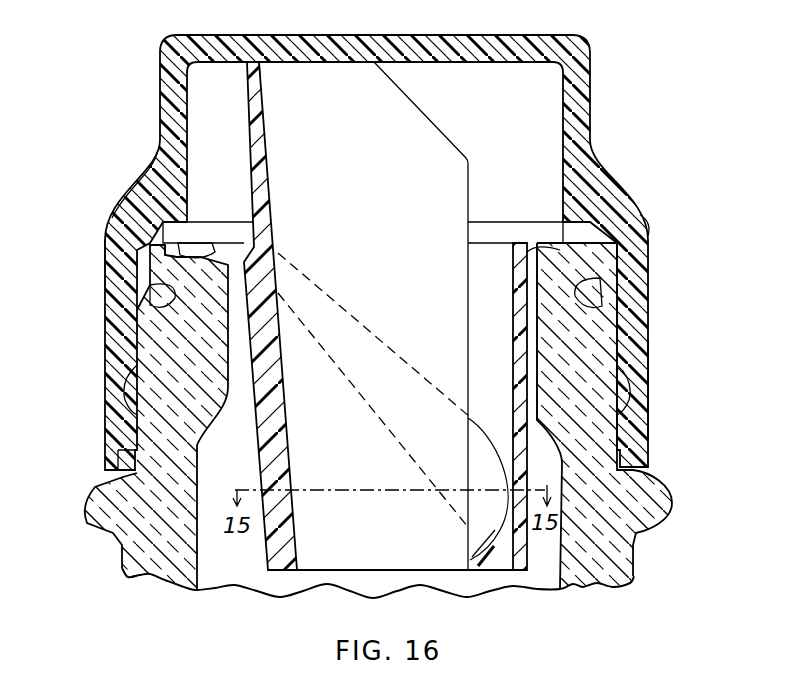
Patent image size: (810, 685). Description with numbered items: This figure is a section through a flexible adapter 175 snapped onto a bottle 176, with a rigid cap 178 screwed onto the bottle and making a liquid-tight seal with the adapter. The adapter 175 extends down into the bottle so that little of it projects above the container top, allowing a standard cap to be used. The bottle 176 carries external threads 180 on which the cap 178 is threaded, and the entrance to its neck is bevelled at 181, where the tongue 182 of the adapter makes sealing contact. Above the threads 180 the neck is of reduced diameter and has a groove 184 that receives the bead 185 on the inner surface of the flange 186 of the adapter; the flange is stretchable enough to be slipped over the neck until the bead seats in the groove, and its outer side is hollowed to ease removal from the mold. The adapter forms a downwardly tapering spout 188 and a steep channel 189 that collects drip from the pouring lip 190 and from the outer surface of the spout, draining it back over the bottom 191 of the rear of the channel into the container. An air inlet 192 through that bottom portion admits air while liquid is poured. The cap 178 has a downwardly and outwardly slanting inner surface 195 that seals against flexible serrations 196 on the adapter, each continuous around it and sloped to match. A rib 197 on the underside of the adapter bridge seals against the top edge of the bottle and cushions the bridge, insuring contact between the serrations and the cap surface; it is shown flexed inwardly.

The adapter 175 is at (282, 422).
The bottle 176 is at (608, 583).
The cap 178 is at (585, 148).
The external threads 180 is at (648, 370).
The bevelled entrance 181 is at (205, 232).
The tongue 182 is at (237, 240).
The groove 184 is at (575, 297).
The bead 185 is at (160, 288).
The flange 186 is at (640, 233).
The spout 188 is at (432, 135).
The channel 189 is at (487, 240).
The pouring lip 190 is at (250, 70).
The bottom of the rear of the channel 191 is at (480, 567).
The air inlet 192 is at (510, 553).
The inner surface 195 is at (107, 235).
The serrations 196 is at (150, 178).
The rib 197 is at (192, 232).